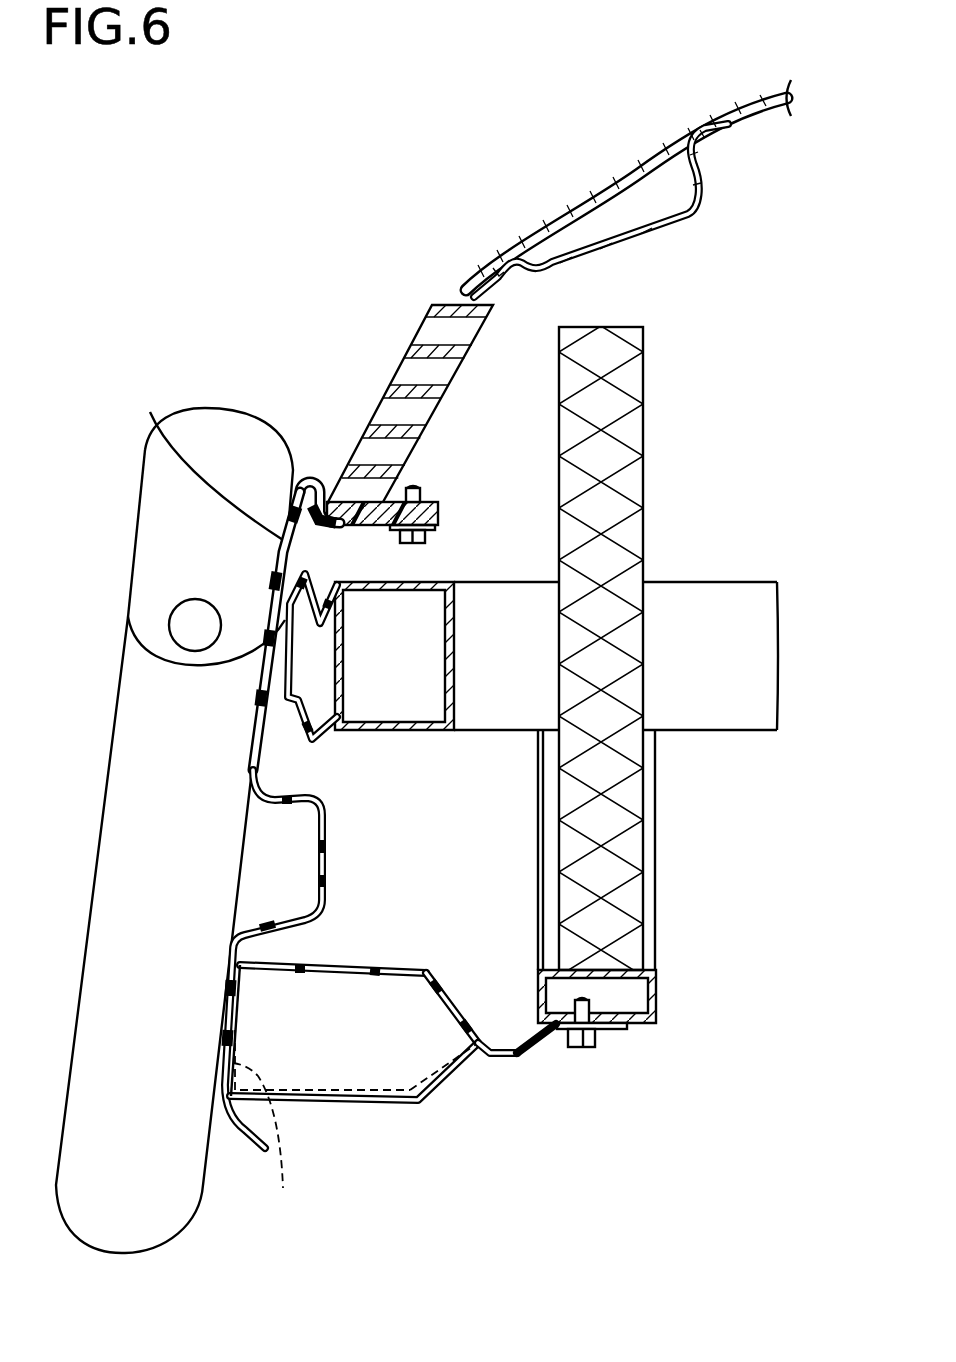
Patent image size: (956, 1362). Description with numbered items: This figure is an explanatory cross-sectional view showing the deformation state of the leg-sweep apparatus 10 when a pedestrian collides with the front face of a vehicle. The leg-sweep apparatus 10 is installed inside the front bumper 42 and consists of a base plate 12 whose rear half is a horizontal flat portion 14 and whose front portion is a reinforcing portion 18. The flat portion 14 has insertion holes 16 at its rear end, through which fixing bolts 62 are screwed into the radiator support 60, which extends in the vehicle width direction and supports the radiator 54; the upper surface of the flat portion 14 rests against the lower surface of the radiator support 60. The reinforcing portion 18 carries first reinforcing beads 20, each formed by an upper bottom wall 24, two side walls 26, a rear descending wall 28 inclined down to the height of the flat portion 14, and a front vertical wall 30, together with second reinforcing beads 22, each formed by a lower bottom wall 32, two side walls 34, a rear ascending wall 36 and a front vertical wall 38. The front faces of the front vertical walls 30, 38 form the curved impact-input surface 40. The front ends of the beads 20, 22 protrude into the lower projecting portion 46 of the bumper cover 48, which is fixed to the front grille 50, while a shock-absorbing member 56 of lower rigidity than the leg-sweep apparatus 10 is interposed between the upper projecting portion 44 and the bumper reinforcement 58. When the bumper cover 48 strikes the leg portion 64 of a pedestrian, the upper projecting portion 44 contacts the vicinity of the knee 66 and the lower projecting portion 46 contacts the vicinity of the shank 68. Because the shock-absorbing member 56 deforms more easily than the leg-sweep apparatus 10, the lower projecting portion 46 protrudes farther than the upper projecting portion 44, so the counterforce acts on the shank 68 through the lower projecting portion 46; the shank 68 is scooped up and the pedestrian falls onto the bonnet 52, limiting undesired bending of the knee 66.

The leg-sweep apparatus 10 is at (377, 1028).
The base plate 12 is at (503, 1103).
The flat portion 14 is at (532, 1062).
The insertion holes 16 is at (597, 1045).
The reinforcing portion 18 is at (451, 1083).
The first reinforcing beads 20 is at (333, 905).
The second reinforcing beads 22 is at (342, 1108).
The upper bottom wall 24 is at (323, 963).
The side walls 26 is at (461, 991).
The rear descending wall 28 is at (462, 1011).
The front vertical wall 30 is at (245, 1002).
The lower bottom wall 32 is at (307, 1097).
The side walls 34 is at (368, 1078).
The rear ascending wall 36 is at (433, 1093).
The front vertical wall 38 is at (264, 1140).
The impact-input surface 40 is at (180, 754).
The front bumper 42 is at (312, 470).
The upper projecting portion 44 is at (206, 462).
The lower projecting portion 46 is at (218, 1065).
The bumper cover 48 is at (317, 860).
The front grille 50 is at (380, 389).
The bonnet 52 is at (597, 160).
The radiator 54 is at (656, 406).
The shock-absorbing member 56 is at (318, 748).
The bumper reinforcement 58 is at (393, 730).
The radiator support 60 is at (653, 993).
The fixing bolts 62 is at (580, 1043).
The leg portion 64 is at (166, 842).
The knee 66 is at (243, 630).
The shank 68 is at (195, 1015).